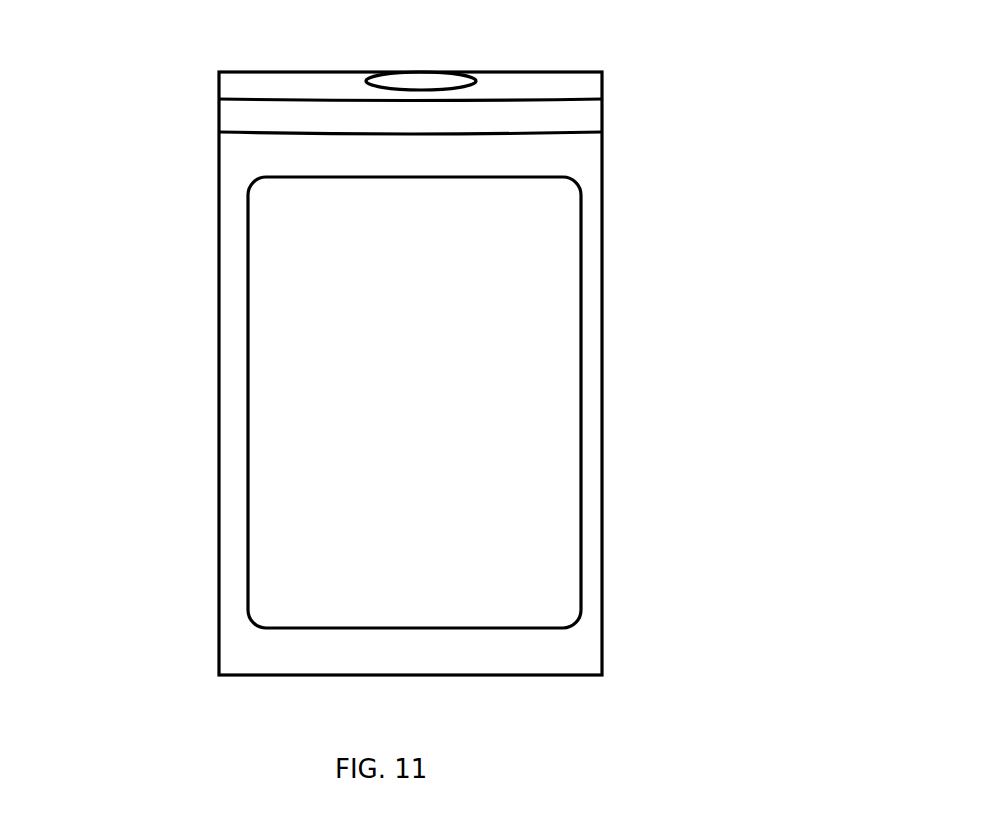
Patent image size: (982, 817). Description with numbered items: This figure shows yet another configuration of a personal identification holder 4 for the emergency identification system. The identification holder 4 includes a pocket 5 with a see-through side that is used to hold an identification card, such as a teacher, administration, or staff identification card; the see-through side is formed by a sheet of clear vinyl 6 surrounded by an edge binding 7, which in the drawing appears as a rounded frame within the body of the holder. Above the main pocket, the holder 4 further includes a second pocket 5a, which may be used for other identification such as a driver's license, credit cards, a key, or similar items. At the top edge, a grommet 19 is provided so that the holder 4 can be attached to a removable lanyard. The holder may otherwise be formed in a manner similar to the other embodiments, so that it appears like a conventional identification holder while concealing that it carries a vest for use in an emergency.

The identification holder 4 is at (215, 173).
The pocket 5 is at (553, 312).
The second pocket 5a is at (528, 87).
The sheet of clear vinyl 6 is at (293, 310).
The edge binding 7 is at (235, 225).
The grommet 19 is at (462, 71).